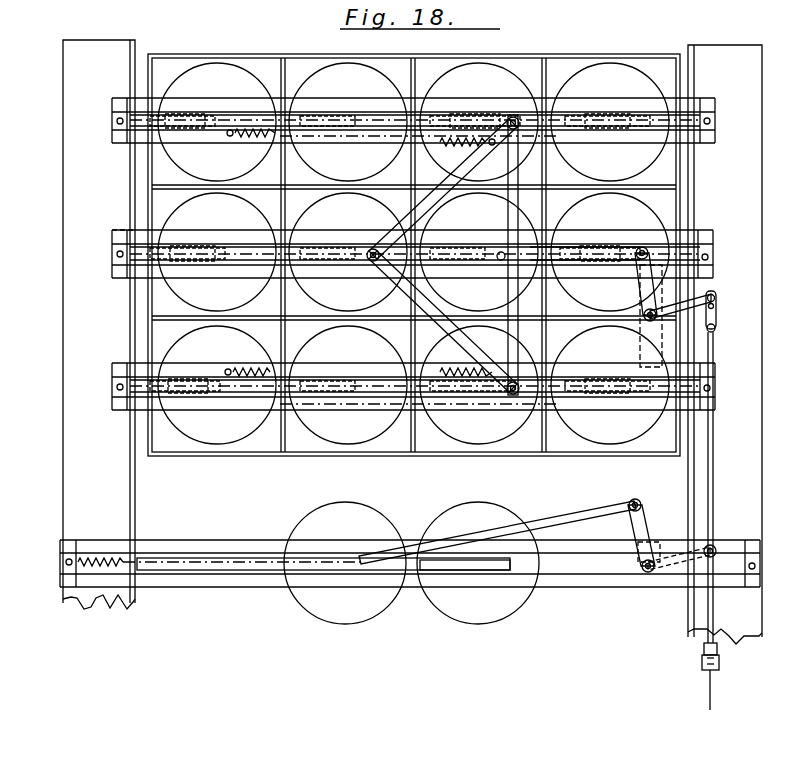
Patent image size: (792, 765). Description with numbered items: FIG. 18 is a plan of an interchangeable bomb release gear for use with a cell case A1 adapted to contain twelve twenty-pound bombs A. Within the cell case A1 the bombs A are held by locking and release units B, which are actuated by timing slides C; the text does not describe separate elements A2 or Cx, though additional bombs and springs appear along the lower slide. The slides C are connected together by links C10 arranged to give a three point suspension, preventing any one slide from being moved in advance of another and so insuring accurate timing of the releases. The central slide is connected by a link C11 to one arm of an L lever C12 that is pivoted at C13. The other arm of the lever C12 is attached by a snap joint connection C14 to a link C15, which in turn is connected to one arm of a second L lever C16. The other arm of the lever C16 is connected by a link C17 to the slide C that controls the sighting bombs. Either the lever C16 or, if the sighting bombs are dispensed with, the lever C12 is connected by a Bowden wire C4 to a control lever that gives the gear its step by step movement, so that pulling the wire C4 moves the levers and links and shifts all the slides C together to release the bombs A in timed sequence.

The bombs A is at (413, 257).
The cell case A1 is at (414, 270).
The lower carrier drum A2 is at (411, 563).
The locking and release units B is at (320, 117).
The timing slides C is at (395, 128).
The spring Cx is at (130, 560).
The links C10 is at (428, 203).
The link C11 is at (540, 262).
The L lever C12 is at (643, 298).
The pivot C13 is at (648, 319).
The snap joint connection C14 is at (716, 318).
The link C15 is at (727, 478).
The L lever C16 is at (690, 553).
The link C17 is at (572, 521).
The Bowden wire C4 is at (708, 616).